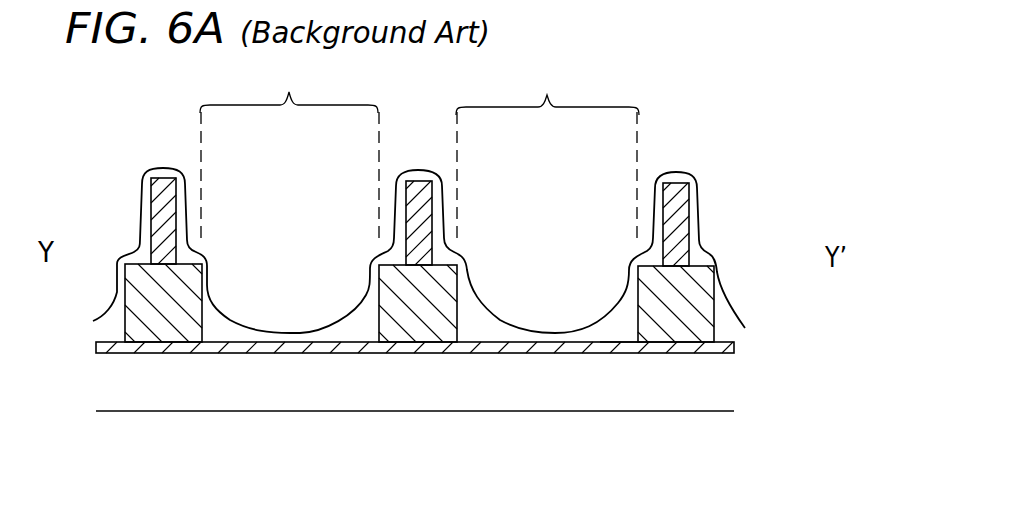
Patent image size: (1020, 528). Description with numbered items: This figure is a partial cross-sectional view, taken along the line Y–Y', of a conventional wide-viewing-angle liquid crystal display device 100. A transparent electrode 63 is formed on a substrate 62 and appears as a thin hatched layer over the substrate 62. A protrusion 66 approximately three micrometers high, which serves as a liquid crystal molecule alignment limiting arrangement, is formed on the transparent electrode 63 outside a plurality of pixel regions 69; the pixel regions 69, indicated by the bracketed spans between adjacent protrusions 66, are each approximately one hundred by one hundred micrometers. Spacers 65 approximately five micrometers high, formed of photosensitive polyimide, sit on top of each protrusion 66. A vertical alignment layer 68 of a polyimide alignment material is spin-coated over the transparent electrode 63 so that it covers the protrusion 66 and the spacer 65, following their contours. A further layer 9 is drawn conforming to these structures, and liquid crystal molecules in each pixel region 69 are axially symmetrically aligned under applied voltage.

The passivation layer 9 is at (650, 153).
The substrate 62 is at (708, 392).
The transparent electrode 63 is at (728, 350).
The spacer 65 is at (680, 213).
The protrusion 66 is at (698, 293).
The vertical alignment layer 68 is at (620, 327).
The pixel region 69 is at (419, 152).
The liquid crystal display device 100 is at (829, 177).